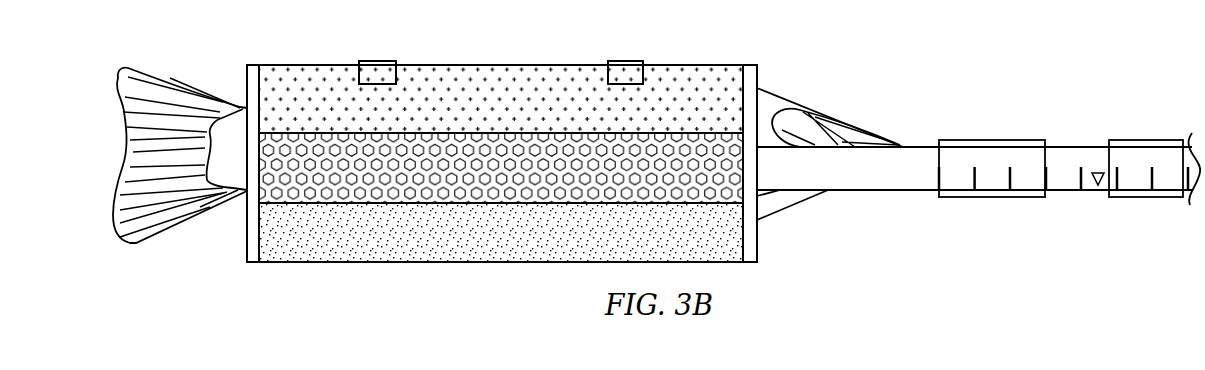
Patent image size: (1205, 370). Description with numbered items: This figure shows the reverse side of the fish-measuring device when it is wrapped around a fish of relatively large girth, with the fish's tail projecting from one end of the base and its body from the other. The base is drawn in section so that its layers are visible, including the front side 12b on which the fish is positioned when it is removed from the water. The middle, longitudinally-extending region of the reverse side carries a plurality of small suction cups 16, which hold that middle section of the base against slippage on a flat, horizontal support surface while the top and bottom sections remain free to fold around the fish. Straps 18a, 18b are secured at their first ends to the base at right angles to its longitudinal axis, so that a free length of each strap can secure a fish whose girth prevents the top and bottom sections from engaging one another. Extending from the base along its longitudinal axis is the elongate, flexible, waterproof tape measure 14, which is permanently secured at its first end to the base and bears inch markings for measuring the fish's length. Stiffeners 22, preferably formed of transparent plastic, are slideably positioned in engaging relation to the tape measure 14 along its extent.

The front side 12b is at (500, 72).
The suction cups 16 is at (327, 162).
The strap 18a is at (380, 70).
The strap 18b is at (630, 63).
The tape measure 14 is at (1082, 147).
The stiffeners 22 is at (994, 140).